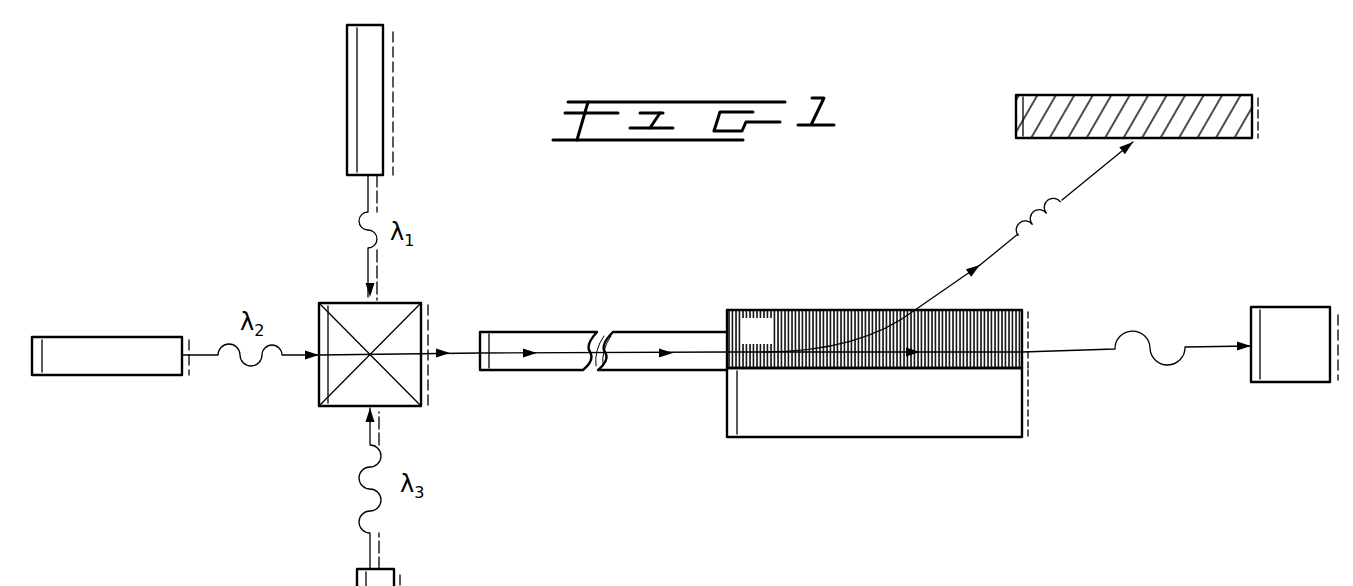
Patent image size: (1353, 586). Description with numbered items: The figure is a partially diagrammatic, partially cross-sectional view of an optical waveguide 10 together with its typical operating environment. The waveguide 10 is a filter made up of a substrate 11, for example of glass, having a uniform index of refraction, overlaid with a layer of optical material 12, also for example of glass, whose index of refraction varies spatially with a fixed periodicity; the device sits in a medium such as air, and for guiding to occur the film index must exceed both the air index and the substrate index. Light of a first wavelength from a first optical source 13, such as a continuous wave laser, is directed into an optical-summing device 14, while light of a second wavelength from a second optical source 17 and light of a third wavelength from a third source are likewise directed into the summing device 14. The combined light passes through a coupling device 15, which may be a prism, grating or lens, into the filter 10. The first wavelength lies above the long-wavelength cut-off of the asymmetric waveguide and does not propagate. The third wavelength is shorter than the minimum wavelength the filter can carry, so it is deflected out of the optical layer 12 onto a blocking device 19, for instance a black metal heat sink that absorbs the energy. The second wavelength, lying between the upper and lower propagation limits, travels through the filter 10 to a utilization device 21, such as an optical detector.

The optical waveguide 10 is at (782, 284).
The substrate 11 is at (1022, 417).
The layer of optical material 12 is at (1022, 333).
The first optical source 13 is at (348, 114).
The optical-summing device 14 is at (422, 384).
The coupling device 15 is at (576, 330).
The second optical source 17 is at (166, 377).
The blocking device 19 is at (1195, 140).
The utilization device 21 is at (1302, 305).